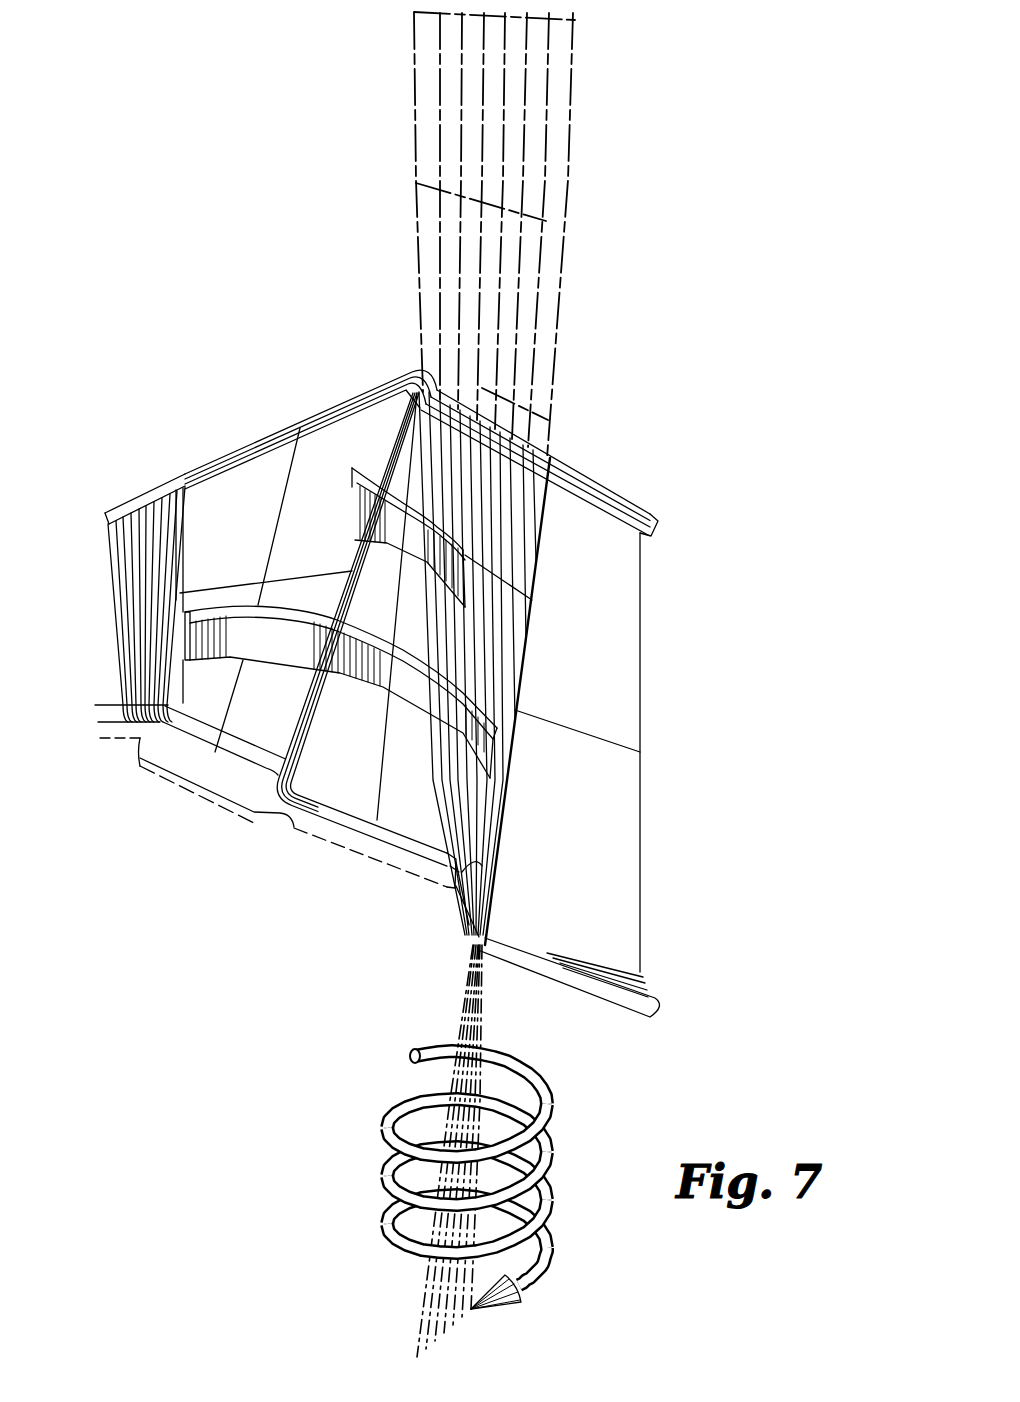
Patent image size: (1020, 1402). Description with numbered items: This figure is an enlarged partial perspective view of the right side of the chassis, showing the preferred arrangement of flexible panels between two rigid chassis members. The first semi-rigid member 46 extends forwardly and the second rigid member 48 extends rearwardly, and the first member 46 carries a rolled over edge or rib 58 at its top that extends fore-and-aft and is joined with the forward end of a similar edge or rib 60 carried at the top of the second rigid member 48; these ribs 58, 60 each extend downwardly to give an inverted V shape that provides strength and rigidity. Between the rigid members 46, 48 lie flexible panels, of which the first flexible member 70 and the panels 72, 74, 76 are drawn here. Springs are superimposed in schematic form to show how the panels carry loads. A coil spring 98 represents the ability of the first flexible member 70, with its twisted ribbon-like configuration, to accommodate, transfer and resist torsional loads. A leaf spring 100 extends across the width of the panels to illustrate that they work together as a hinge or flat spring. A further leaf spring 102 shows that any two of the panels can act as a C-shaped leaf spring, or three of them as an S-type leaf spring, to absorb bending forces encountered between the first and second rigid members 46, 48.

The first semi-rigid member 46 is at (584, 850).
The second rigid member 48 is at (262, 418).
The rolled over edge or rib 58 is at (610, 507).
The edge or rib 60 is at (353, 392).
The first flexible member 70 is at (462, 862).
The flexible panel 72 is at (418, 795).
The flexible panel 74 is at (280, 714).
The flexible panel 76 is at (140, 605).
The coil spring 98 is at (557, 1147).
The leaf spring 100 is at (218, 637).
The C-shaped or S-type leaf spring 102 is at (385, 538).